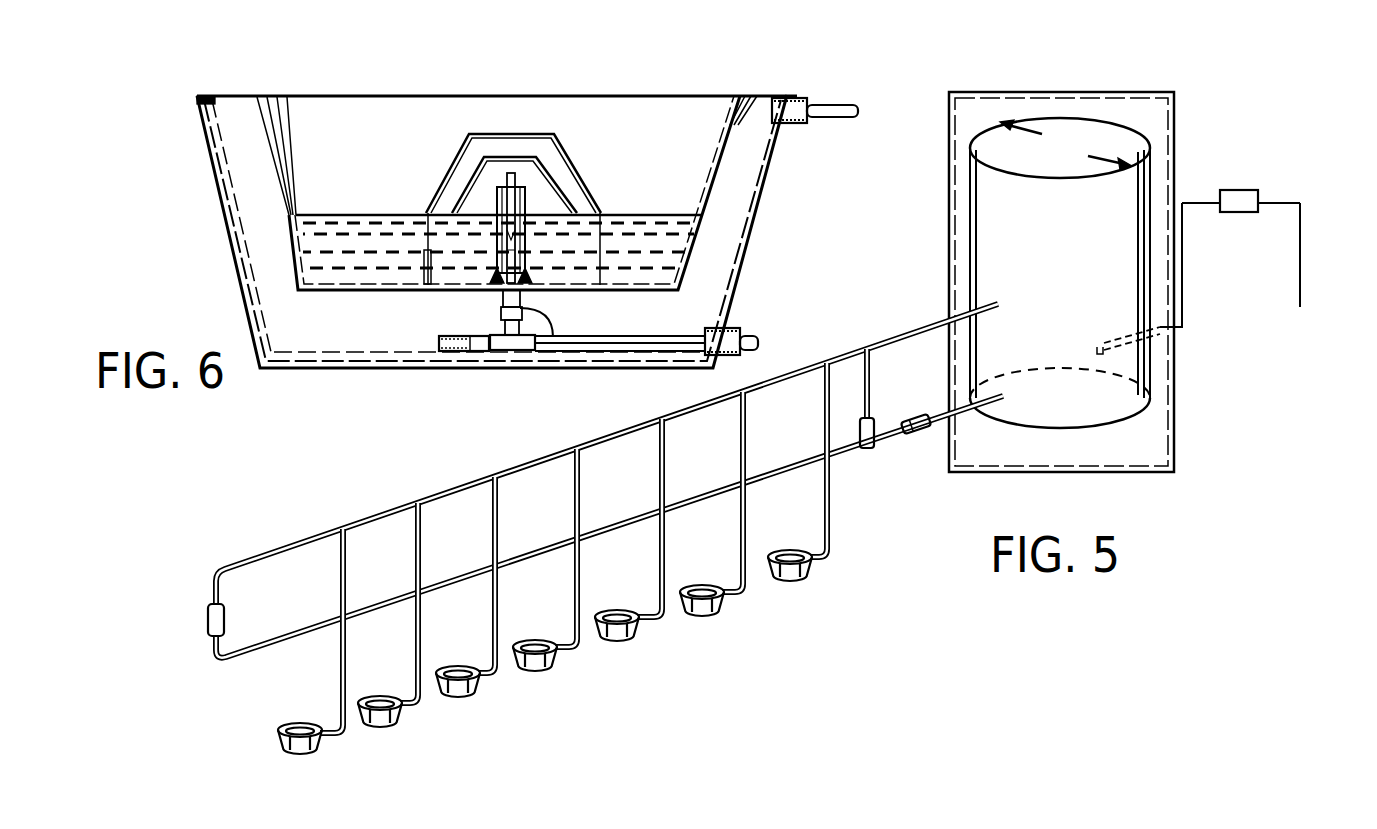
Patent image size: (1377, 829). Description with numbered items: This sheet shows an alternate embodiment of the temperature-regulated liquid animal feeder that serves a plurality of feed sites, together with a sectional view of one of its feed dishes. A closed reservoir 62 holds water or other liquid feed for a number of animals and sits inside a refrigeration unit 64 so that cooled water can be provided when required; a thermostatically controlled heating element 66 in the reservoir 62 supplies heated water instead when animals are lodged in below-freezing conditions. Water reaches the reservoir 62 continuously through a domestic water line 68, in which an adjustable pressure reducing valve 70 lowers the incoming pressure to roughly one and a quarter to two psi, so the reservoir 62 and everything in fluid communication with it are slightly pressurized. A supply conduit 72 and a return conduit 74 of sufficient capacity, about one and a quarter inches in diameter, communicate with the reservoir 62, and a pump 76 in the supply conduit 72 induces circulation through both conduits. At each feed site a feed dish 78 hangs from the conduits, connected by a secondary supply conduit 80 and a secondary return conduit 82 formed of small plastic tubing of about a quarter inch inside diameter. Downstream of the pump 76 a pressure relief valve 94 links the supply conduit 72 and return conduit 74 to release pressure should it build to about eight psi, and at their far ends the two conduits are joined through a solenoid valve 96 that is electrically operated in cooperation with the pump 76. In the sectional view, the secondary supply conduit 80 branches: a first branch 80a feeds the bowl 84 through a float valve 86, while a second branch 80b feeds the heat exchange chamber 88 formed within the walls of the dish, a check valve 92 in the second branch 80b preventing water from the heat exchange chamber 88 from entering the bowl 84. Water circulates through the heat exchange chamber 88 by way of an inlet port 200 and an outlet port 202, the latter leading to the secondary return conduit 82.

In FIG. 5, the reservoir 62 is at (1145, 170).
In FIG. 5, the refrigeration unit 64 is at (1140, 92).
In FIG. 5, the thermostatically controlled heating element 66 is at (1120, 345).
In FIG. 5, the domestic water line 68 is at (1300, 240).
In FIG. 5, the adjustable pressure reducing valve 70 is at (1245, 192).
In FIG. 5, the supply conduit 72 is at (932, 445).
In FIG. 5, the return conduit 74 is at (917, 330).
In FIG. 5, the pump 76 is at (913, 420).
In FIG. 6, the feed dish 78 is at (215, 228).
In FIG. 5, the feed dish 78 is at (442, 692).
In FIG. 6, the secondary supply conduit 80 is at (755, 337).
In FIG. 5, the secondary supply conduit 80 is at (340, 652).
In FIG. 6, the first branch 80a is at (548, 353).
In FIG. 6, the second branch 80b is at (503, 352).
In FIG. 6, the secondary return conduit 82 is at (817, 123).
In FIG. 5, the secondary return conduit 82 is at (375, 668).
In FIG. 6, the bowl 84 is at (334, 128).
In FIG. 6, the float valve 86 is at (560, 190).
In FIG. 6, the heat exchange chamber 88 is at (387, 323).
In FIG. 6, the check valve 92 is at (460, 355).
In FIG. 5, the pressure relief valve 94 is at (870, 448).
In FIG. 5, the solenoid valve 96 is at (205, 622).
In FIG. 6, the inlet port 200 is at (745, 330).
In FIG. 6, the outlet port 202 is at (805, 100).